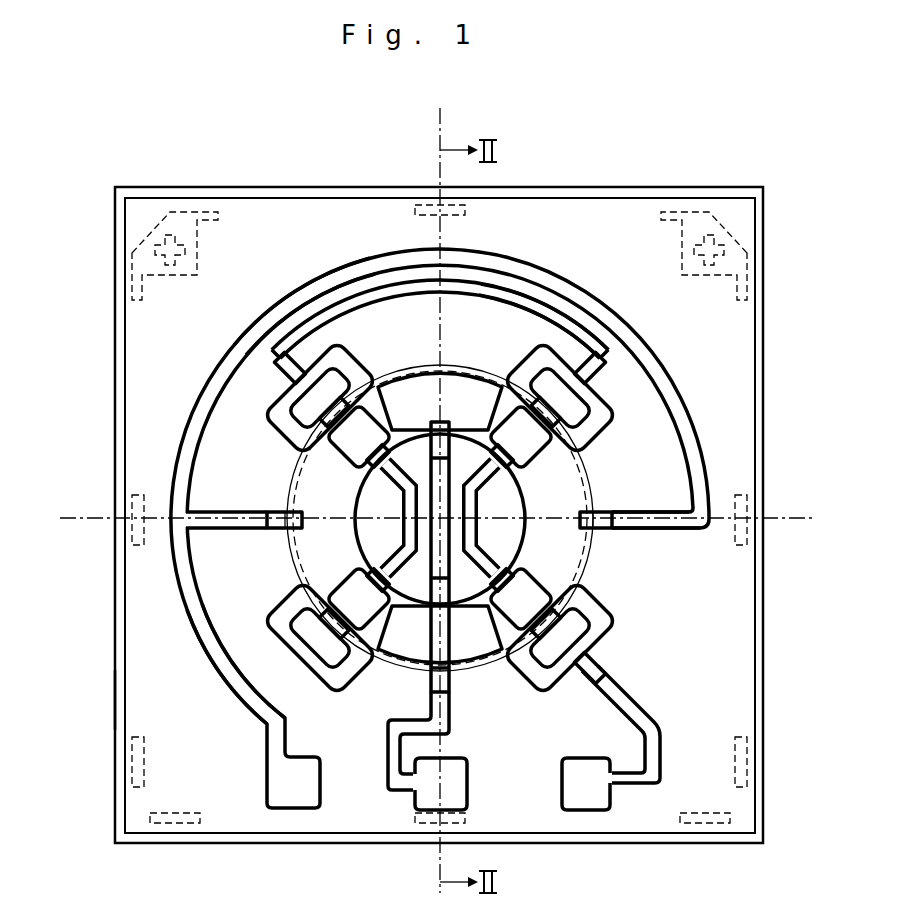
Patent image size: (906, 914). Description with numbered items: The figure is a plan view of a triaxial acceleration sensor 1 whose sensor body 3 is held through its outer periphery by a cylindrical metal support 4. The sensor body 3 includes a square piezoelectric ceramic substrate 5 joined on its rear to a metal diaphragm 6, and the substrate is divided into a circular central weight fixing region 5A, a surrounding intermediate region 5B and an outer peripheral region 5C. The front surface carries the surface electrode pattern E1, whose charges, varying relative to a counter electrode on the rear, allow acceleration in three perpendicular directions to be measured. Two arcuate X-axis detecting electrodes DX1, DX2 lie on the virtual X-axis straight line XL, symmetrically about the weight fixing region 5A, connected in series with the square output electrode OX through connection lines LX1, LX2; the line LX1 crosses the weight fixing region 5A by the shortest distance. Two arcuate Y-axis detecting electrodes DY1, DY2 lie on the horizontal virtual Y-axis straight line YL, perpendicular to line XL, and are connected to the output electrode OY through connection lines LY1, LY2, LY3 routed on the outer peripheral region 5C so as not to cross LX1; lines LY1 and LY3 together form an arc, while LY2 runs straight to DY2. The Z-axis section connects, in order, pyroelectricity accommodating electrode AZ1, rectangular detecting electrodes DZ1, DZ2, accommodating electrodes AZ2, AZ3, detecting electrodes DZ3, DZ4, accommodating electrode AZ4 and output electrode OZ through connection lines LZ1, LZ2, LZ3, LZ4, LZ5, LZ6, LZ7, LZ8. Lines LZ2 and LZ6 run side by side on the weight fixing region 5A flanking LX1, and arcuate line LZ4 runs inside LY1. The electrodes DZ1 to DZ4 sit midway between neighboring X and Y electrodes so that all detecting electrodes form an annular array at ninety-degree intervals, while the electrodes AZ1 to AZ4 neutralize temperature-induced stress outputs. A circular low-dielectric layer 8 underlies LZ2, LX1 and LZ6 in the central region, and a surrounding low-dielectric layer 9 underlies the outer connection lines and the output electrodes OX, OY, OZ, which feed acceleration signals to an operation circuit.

The triaxial acceleration sensor 1 is at (171, 184).
The sensor body 3 is at (118, 370).
The support 4 is at (118, 698).
The piezoelectric ceramic substrate 5 is at (757, 343).
The weight fixing region 5A is at (565, 553).
The intermediate region 5B is at (540, 598).
The outer peripheral region 5C is at (718, 583).
The diaphragm 6 is at (121, 628).
The low-dielectric layer 8 is at (620, 513).
The low-dielectric layer 9 is at (722, 676).
The surface electrode pattern E1 is at (170, 462).
The virtual X-axis straight line XL is at (437, 486).
The virtual Y-axis straight line YL is at (454, 518).
The X-axis direction acceleration detecting electrode DX1 is at (418, 385).
The X-axis direction acceleration detecting electrode DX2 is at (462, 662).
The Y-axis direction acceleration detecting electrode DY1 is at (398, 505).
The Y-axis direction acceleration detecting electrode DY2 is at (528, 545).
The Z-axis direction acceleration detecting electrode DZ1 is at (345, 592).
The Z-axis direction acceleration detecting electrode DZ2 is at (359, 425).
The Z-axis direction acceleration detecting electrode DZ3 is at (540, 445).
The Z-axis direction acceleration detecting electrode DZ4 is at (535, 607).
The pyroelectricity accommodating electrode AZ1 is at (303, 650).
The pyroelectricity accommodating electrode AZ2 is at (287, 392).
The pyroelectricity accommodating electrode AZ3 is at (592, 423).
The pyroelectricity accommodating electrode AZ4 is at (582, 630).
The connection line LX1 is at (373, 640).
The connection line LX2 is at (450, 722).
The connection line LY1 is at (268, 318).
The connection line LY2 is at (265, 512).
The connection line LY3 is at (218, 662).
The connection line LZ1 is at (330, 635).
The connection line LZ2 is at (295, 460).
The connection line LZ3 is at (285, 380).
The connection line LZ4 is at (340, 300).
The connection line LZ5 is at (597, 375).
The connection line LZ6 is at (552, 305).
The connection line LZ7 is at (555, 653).
The connection line LZ8 is at (648, 717).
The X-axis direction output electrode OX is at (456, 795).
The Y-axis direction output electrode OY is at (288, 793).
The Z-axis direction output electrode OZ is at (582, 797).